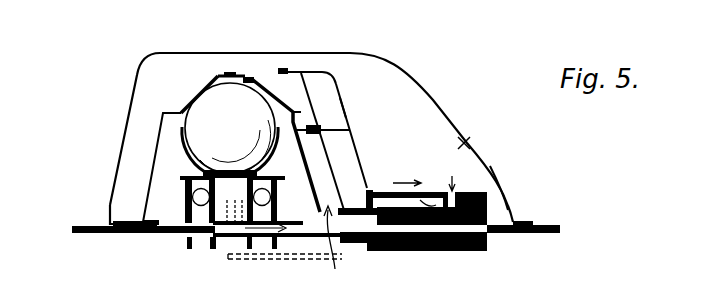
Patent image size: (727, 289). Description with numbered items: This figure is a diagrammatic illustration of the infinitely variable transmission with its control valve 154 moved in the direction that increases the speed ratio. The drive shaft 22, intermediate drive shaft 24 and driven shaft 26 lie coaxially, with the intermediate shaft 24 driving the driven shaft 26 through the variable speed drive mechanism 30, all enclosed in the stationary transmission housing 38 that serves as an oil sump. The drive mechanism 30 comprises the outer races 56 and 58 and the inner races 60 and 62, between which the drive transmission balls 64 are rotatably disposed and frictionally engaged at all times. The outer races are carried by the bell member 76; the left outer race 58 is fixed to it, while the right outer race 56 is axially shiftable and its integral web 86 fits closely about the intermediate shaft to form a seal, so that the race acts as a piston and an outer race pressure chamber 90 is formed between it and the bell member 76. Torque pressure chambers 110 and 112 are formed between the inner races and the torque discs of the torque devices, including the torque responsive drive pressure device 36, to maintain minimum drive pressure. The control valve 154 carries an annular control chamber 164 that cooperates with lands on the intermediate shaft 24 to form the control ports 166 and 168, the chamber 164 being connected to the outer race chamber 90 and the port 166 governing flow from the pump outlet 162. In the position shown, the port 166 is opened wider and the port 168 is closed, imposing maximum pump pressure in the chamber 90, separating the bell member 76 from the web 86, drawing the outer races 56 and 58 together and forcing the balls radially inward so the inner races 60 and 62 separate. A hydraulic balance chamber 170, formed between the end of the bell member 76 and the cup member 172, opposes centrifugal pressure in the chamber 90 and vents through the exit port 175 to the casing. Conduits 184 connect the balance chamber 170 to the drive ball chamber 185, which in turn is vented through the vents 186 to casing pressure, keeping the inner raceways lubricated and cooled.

The drive shaft 22 is at (545, 234).
The intermediate drive shaft 24 is at (396, 251).
The driven shaft 26 is at (82, 226).
The variable speed drive mechanism 30 is at (284, 212).
The torque responsive drive pressure device 36 is at (185, 195).
The transmission housing 38 is at (492, 170).
The outer race 56 is at (272, 90).
The outer race 58 is at (196, 100).
The inner race 60 is at (279, 130).
The inner race 62 is at (183, 131).
The drive transmission balls 64 is at (211, 97).
The bell member 76 is at (311, 88).
The web of outer race 86 is at (335, 246).
The outer race pressure chamber 90 is at (291, 85).
The torque pressure chamber 110 is at (228, 190).
The torque pressure chamber 112 is at (167, 232).
The control valve 154 is at (464, 143).
The pump outlet 162 is at (455, 188).
The control chamber 164 is at (401, 186).
The control port 166 is at (428, 190).
The control port 168 is at (373, 188).
The hydraulic balance chamber 170 is at (343, 54).
The cup member 172 is at (340, 98).
The exit port 175 is at (343, 128).
The conduits 184 is at (275, 261).
The drive ball chamber 185 is at (204, 228).
The vents 186 is at (229, 72).